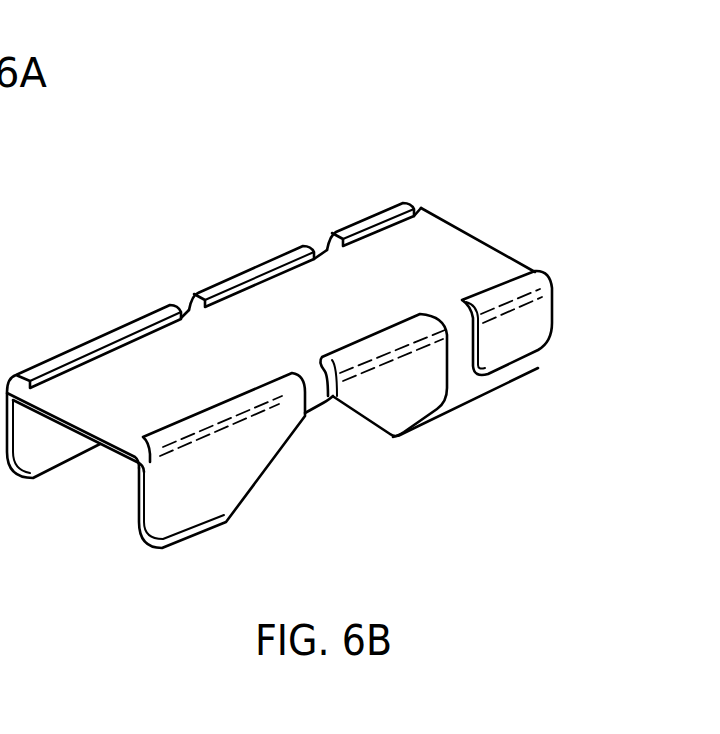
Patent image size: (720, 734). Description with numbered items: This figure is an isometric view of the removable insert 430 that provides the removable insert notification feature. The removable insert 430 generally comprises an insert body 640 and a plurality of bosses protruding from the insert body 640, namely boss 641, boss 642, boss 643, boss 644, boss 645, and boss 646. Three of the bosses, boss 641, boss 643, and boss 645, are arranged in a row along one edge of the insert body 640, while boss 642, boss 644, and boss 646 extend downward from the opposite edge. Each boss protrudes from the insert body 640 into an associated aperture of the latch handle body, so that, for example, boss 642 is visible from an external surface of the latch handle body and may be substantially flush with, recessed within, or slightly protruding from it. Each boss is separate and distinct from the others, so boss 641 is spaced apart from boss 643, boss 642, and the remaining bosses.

The removable insert 430 is at (416, 108).
The insert body 640 is at (458, 250).
The boss 641 is at (92, 345).
The boss 642 is at (242, 455).
The boss 643 is at (248, 272).
The boss 644 is at (400, 393).
The boss 645 is at (368, 220).
The boss 646 is at (510, 345).